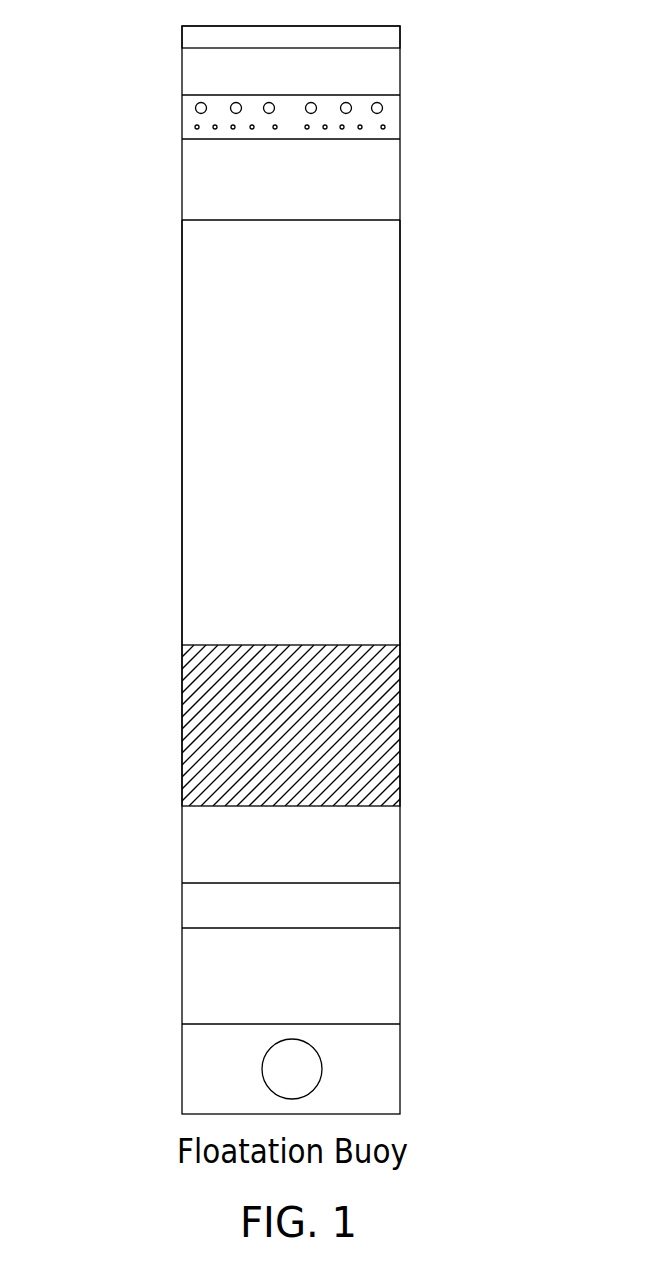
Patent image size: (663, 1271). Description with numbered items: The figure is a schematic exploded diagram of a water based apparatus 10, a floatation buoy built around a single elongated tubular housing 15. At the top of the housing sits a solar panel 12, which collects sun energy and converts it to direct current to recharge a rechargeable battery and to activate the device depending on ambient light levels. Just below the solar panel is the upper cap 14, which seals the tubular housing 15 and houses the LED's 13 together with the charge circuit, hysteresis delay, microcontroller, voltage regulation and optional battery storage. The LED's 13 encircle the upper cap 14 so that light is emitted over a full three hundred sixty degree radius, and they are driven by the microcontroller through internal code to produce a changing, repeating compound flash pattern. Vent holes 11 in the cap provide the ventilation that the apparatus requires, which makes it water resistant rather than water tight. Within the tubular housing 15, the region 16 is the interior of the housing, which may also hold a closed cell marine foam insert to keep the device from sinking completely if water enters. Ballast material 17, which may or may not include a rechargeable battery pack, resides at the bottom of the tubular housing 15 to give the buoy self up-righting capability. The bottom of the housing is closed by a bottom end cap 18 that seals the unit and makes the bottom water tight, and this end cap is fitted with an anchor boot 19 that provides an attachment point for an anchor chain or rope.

The water based apparatus 10 is at (130, 404).
The vent holes 11 is at (387, 126).
The solar panel 12 is at (400, 37).
The LED's 13 is at (383, 107).
The upper cap 14 is at (400, 135).
The tubular housing 15 is at (400, 256).
The interior chamber 16 is at (329, 333).
The ballast material 17 is at (400, 709).
The bottom end cap 18 is at (401, 906).
The anchor boot 19 is at (401, 1063).